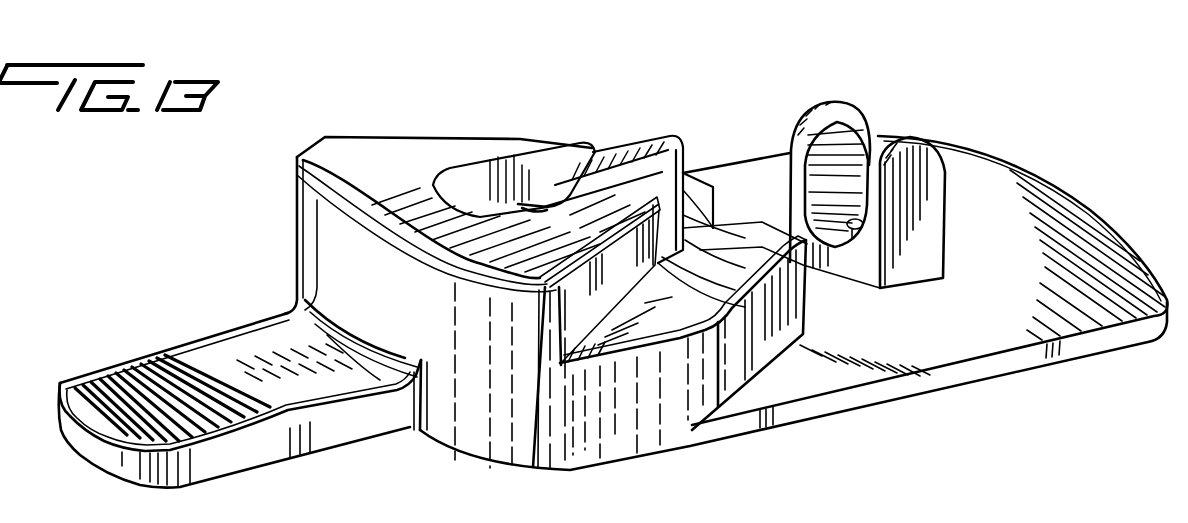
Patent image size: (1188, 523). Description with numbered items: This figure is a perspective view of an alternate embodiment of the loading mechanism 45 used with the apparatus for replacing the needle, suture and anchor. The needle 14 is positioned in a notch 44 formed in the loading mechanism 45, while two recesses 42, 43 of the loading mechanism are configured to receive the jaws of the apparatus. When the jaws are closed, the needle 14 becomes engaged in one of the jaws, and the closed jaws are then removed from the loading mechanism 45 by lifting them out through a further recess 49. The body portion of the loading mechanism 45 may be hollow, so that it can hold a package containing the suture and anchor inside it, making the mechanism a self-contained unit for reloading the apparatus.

The needle 14 is at (533, 200).
The recess 42 is at (381, 128).
The recess 43 is at (653, 320).
The notch 44 is at (547, 200).
The loading mechanism 45 is at (960, 385).
The recess 49 is at (460, 178).